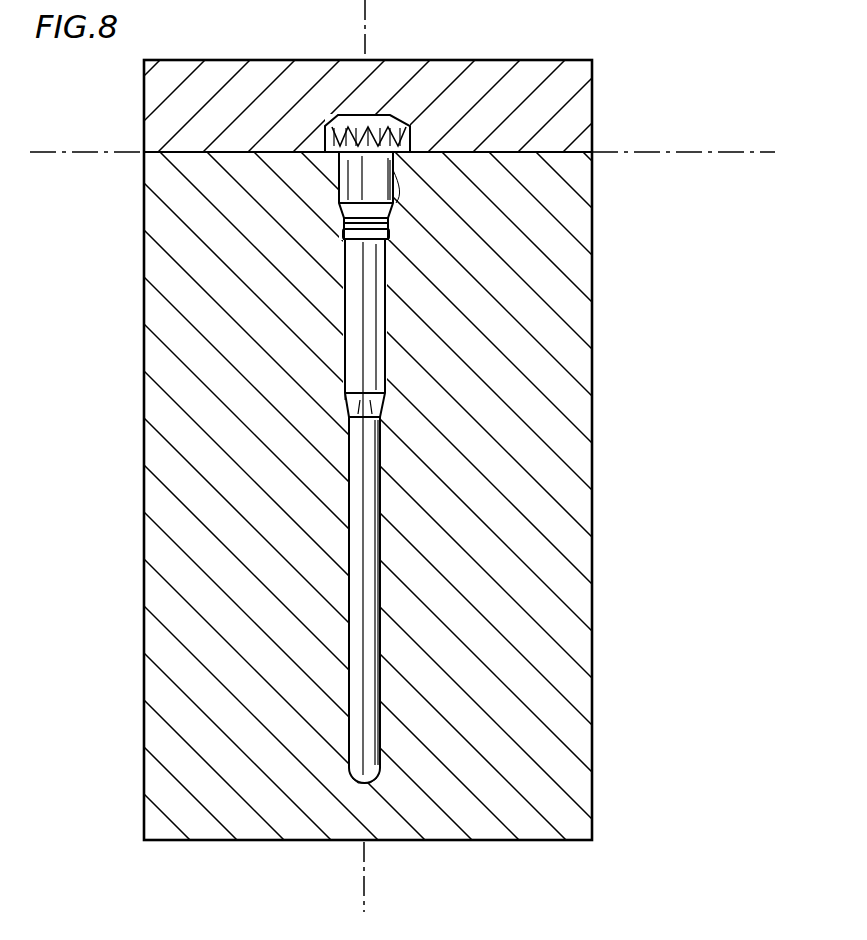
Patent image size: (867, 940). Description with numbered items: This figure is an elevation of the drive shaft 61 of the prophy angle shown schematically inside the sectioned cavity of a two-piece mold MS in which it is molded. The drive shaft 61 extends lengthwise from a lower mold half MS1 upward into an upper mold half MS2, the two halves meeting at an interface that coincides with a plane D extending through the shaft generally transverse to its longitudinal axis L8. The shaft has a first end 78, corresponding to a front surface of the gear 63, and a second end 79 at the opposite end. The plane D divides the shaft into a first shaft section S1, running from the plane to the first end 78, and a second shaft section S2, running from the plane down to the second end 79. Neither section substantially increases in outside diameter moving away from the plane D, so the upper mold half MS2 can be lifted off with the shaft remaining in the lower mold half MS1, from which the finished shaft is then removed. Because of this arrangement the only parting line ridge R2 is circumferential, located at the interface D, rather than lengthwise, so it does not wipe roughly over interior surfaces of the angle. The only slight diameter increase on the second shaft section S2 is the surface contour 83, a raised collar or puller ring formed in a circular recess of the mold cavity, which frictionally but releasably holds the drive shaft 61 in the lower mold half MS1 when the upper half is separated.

The two-piece mold MS is at (140, 596).
The lower mold half MS1 is at (566, 493).
The upper mold half MS2 is at (540, 76).
The plane D is at (683, 151).
The longitudinal axis L8 is at (360, 10).
The drive shaft 61 is at (388, 368).
The gear 63 is at (401, 122).
The first end 78 is at (388, 116).
The surface contour 83 is at (390, 234).
The parting line ridge R2 is at (392, 158).
The second end 79 is at (357, 770).
The first shaft section S1 is at (323, 148).
The second shaft section S2 is at (356, 353).